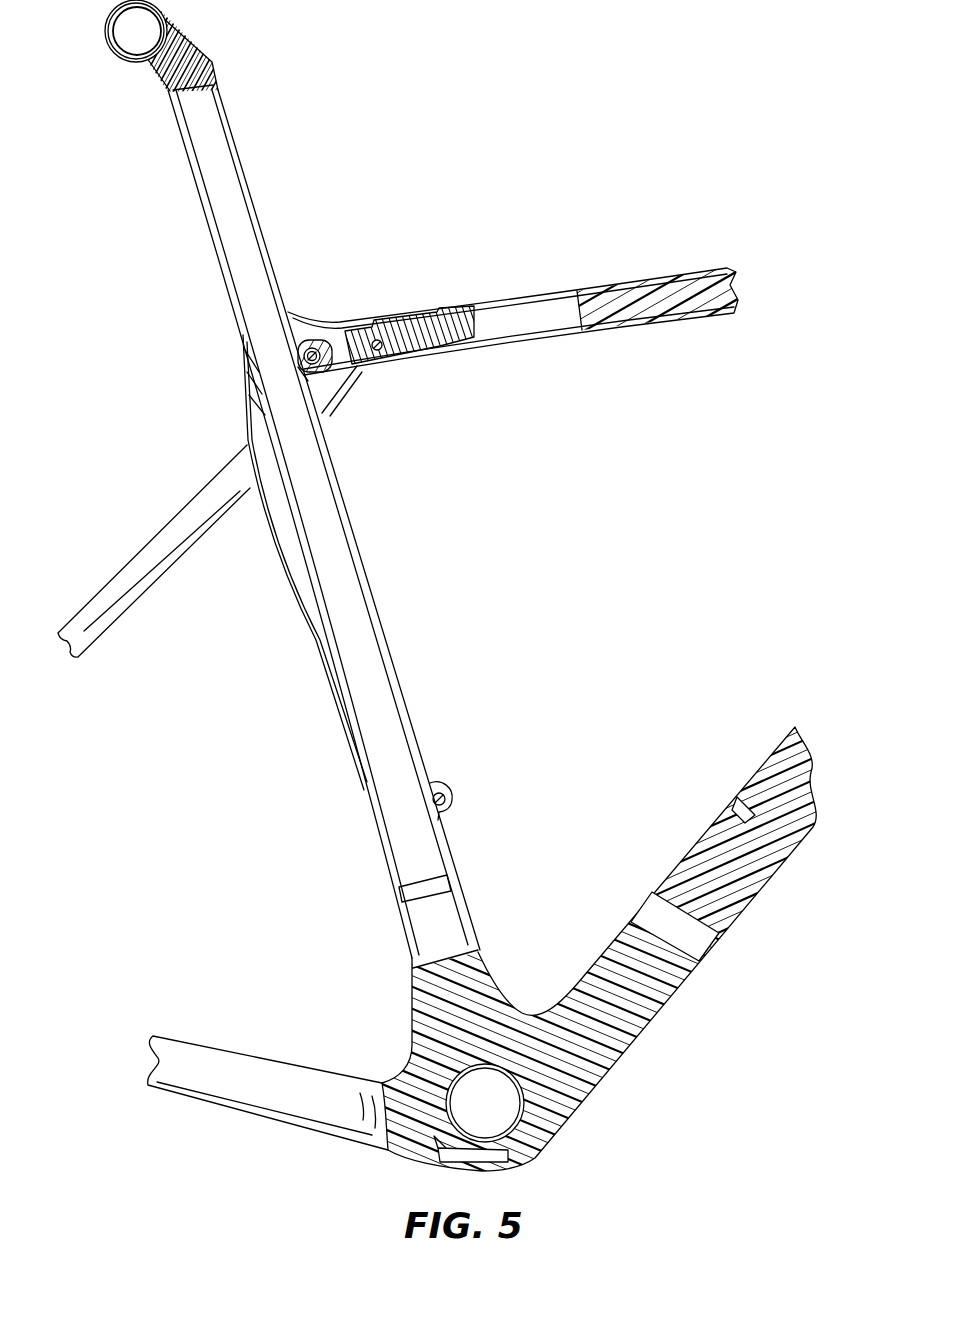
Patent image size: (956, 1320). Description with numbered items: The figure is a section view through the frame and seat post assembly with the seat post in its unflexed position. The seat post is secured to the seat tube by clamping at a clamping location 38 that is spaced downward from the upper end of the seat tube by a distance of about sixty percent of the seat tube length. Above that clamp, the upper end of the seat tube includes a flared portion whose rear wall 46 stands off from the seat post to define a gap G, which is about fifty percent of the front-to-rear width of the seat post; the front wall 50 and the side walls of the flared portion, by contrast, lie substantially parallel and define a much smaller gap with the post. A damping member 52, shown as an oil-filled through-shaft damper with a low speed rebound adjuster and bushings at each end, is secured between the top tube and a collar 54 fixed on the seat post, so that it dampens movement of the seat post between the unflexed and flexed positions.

The clamping location 38 is at (488, 788).
The rear wall 46 is at (250, 473).
The front wall 50 is at (318, 392).
The damping member 52 is at (409, 338).
The collar 54 is at (309, 344).
The gap G is at (249, 440).